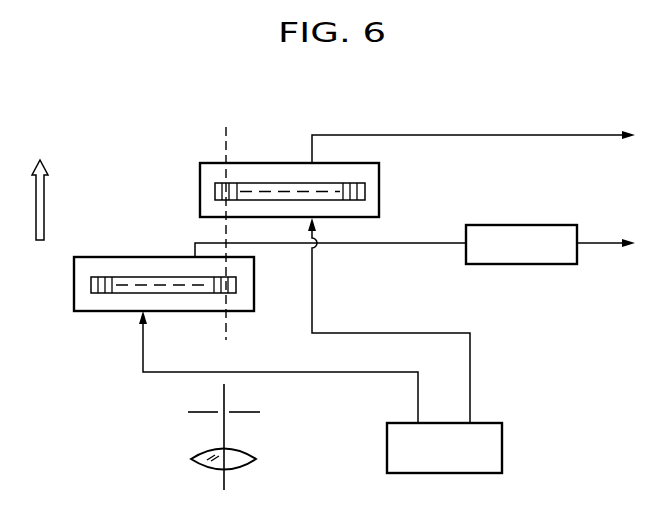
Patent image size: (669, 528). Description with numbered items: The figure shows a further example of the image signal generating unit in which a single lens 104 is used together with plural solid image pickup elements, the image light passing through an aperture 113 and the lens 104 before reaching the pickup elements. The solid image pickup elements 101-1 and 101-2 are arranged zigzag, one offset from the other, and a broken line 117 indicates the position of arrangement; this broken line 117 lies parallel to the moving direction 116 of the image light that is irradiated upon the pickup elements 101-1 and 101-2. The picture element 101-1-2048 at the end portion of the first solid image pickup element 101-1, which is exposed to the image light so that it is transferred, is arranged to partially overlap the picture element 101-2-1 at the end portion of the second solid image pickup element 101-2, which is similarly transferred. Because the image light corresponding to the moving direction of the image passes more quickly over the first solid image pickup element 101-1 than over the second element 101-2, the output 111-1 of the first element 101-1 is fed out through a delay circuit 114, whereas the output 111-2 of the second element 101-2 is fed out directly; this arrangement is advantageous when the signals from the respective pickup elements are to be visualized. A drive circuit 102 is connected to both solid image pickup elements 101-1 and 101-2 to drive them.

The moving direction of the image light 116 is at (44, 183).
The broken line 117 is at (224, 146).
The solid image pickup element 101-2 is at (250, 172).
The picture element 101-2-1 is at (243, 183).
The solid image pickup element 101-1 is at (181, 287).
The picture element 101-1-2048 is at (222, 293).
The output 111-2 is at (516, 135).
The output 111-1 is at (410, 243).
The delay circuit 114 is at (522, 225).
The drive circuit 102 is at (502, 448).
The aperture 113 is at (188, 412).
The lens 104 is at (194, 461).